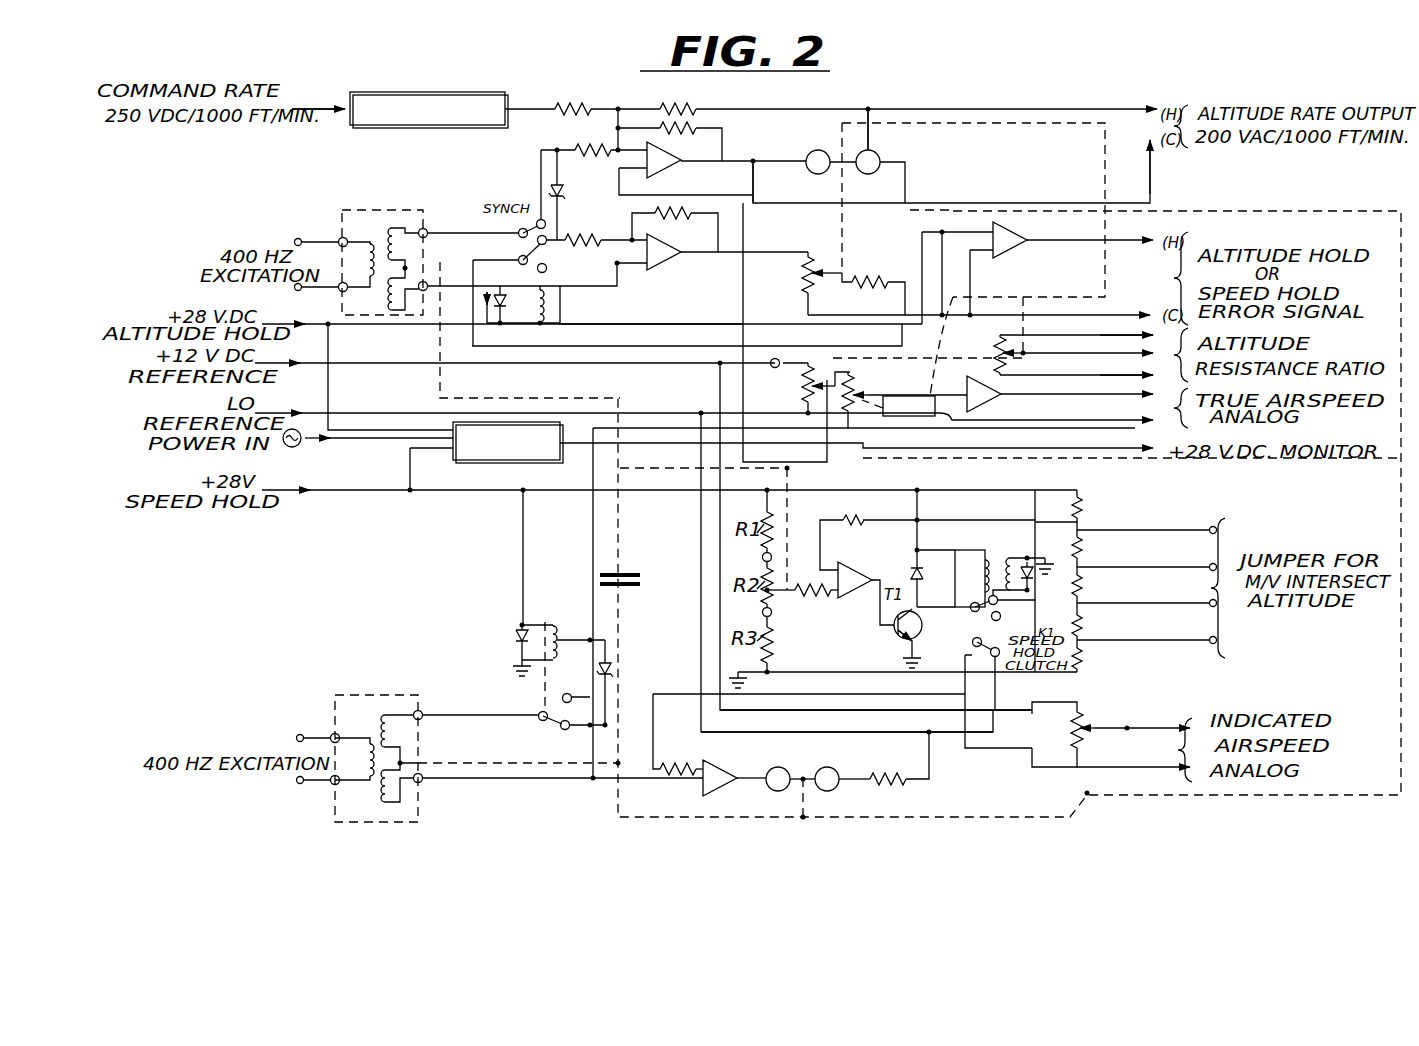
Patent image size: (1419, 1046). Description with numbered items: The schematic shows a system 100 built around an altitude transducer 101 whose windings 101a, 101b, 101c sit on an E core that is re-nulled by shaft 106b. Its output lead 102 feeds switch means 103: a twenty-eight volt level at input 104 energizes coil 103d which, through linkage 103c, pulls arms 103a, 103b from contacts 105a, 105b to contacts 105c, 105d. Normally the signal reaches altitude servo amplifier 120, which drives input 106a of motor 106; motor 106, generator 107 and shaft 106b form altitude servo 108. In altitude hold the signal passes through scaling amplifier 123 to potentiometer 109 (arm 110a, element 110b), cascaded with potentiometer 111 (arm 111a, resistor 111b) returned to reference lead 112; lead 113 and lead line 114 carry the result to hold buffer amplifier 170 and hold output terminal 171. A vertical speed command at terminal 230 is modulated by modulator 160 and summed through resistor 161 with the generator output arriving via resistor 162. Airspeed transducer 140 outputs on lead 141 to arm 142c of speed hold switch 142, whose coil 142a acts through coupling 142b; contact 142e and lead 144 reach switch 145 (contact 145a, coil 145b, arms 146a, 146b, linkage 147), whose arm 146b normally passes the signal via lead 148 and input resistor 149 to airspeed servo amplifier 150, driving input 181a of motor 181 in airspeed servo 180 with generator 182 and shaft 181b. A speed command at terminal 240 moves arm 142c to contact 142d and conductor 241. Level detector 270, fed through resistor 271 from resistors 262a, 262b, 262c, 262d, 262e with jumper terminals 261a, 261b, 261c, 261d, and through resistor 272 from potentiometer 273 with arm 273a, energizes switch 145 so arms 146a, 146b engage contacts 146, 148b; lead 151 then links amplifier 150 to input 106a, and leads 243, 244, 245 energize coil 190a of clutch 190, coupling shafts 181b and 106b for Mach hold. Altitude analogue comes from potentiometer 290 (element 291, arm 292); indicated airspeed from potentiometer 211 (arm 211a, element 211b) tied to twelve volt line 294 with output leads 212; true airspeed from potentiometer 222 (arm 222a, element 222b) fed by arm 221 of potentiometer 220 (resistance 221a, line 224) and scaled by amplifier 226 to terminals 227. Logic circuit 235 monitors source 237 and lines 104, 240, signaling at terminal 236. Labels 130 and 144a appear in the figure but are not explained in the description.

The altitude and airspeed hold system 100 is at (198, 209).
The altitude transducer 101 is at (291, 192).
The winding 101a is at (374, 244).
The winding 101b is at (402, 236).
The winding 101c is at (385, 286).
The output lead 102 is at (428, 231).
The switch means 103 is at (573, 346).
The switch arm 103a is at (527, 218).
The switch arm 103b is at (519, 258).
The mechanical linkage 103c is at (537, 270).
The solenoid coil 103d is at (548, 305).
The altitude hold input 104 is at (316, 315).
The stationary contact 105a is at (563, 194).
The stationary contact 105b is at (596, 253).
The stationary contact 105c is at (549, 237).
The stationary contact 105d is at (548, 271).
The servo motor 106 is at (806, 157).
The motor input 106a is at (781, 182).
The output shaft 106b is at (842, 142).
The generator 107 is at (882, 157).
The altitude servo 108 is at (949, 178).
The adjustable potentiometer 109 is at (793, 283).
The movable arm 110a is at (838, 271).
The resistance element 110b is at (783, 283).
The second potentiometer 111 is at (900, 306).
The rotatable switch arm 111a is at (880, 283).
The resistance element 111b is at (837, 298).
The reference lead 112 is at (1147, 281).
The lead 113 is at (697, 352).
The lead line 114 is at (628, 333).
The altitude servo amplifier 120 is at (712, 143).
The altitude hold scaling amplifier 123 is at (668, 257).
The error signal output line 130 is at (1110, 330).
The airspeed transducer 140 is at (391, 687).
The output lead 141 is at (470, 712).
The vertical speed hold switch 142 is at (577, 607).
The relay coil 142a is at (561, 646).
The mechanical coupling 142b is at (548, 686).
The switch arm 142c is at (524, 730).
The stationary contact 142d is at (583, 722).
The stationary contact 142e is at (518, 752).
The lead 144 is at (798, 740).
The resistor 144a is at (884, 786).
The switch 145 is at (1003, 547).
The stationary contact 145a is at (876, 709).
The relay coil 145b is at (974, 576).
The stationary contact 146 is at (1034, 592).
The switch arm 146a is at (972, 614).
The switch arm 146b is at (973, 643).
The mechanical coupling 147 is at (1017, 615).
The lead line 148 is at (669, 695).
The stationary contact 148b is at (1032, 636).
The input resistor 149 is at (700, 746).
The airspeed servo amplifier 150 is at (703, 789).
The lead 151 is at (1030, 479).
The modulator 160 is at (462, 93).
The resistor 161 is at (566, 102).
The resistor 162 is at (698, 102).
The hold buffer amplifier 170 is at (1020, 236).
The hold output terminal 171 is at (1134, 248).
The airspeed servo 180 is at (773, 764).
The servo motor 181 is at (776, 774).
The motor input 181a is at (770, 791).
The output shaft 181b is at (1245, 212).
The generator 182 is at (842, 774).
The clutch assembly 190 is at (686, 569).
The speed hold clutch solenoid coil 190a is at (1006, 572).
The airspeed analogue potentiometer 211 is at (1148, 694).
The switch arm 211a is at (1133, 755).
The resistance element 211b is at (1089, 725).
The output leads 212 is at (1135, 770).
The potentiometer 220 is at (789, 388).
The switch arm 221 is at (811, 382).
The resistance element 221a is at (801, 392).
The linear potentiometer 222 is at (898, 376).
The switch arm 222a is at (862, 406).
The resistance element 222b is at (864, 424).
The line 224 is at (683, 412).
The scaling amplifier 226 is at (998, 391).
The TAS output terminals 227 is at (1135, 430).
The vertical speed input terminal 230 is at (306, 99).
The logic circuit 235 is at (498, 463).
The monitor output terminal 236 is at (1152, 456).
The power source 237 is at (300, 445).
The speed hold command input terminal 240 is at (340, 492).
The conductor 241 is at (590, 553).
The lead 243 is at (500, 492).
The lead 244 is at (912, 537).
The lead 245 is at (920, 577).
The jumper terminal 261a is at (1148, 515).
The jumper terminal 261b is at (1149, 552).
The jumper terminal 261c is at (1148, 589).
The jumper terminal 261d is at (1149, 626).
The series resistor 262a is at (1086, 512).
The series resistor 262b is at (1086, 547).
The series resistor 262c is at (1086, 582).
The series resistor 262d is at (1086, 622).
The series resistor 262e is at (1086, 658).
The altitude level detector 270 is at (852, 565).
The resistor 271 is at (850, 518).
The resistor 272 is at (818, 605).
The potentiometer 273 is at (824, 535).
The movable switch arm 273a is at (815, 572).
The altitude analogue potentiometer 290 is at (993, 374).
The resistance element 291 is at (1000, 340).
The switch arm 292 is at (1028, 356).
The twelve volt d.c. reference line 294 is at (400, 346).